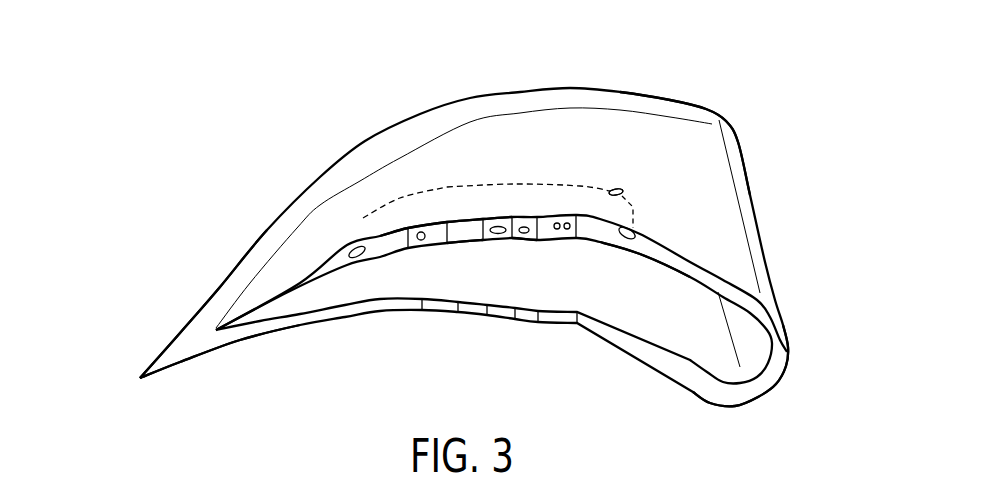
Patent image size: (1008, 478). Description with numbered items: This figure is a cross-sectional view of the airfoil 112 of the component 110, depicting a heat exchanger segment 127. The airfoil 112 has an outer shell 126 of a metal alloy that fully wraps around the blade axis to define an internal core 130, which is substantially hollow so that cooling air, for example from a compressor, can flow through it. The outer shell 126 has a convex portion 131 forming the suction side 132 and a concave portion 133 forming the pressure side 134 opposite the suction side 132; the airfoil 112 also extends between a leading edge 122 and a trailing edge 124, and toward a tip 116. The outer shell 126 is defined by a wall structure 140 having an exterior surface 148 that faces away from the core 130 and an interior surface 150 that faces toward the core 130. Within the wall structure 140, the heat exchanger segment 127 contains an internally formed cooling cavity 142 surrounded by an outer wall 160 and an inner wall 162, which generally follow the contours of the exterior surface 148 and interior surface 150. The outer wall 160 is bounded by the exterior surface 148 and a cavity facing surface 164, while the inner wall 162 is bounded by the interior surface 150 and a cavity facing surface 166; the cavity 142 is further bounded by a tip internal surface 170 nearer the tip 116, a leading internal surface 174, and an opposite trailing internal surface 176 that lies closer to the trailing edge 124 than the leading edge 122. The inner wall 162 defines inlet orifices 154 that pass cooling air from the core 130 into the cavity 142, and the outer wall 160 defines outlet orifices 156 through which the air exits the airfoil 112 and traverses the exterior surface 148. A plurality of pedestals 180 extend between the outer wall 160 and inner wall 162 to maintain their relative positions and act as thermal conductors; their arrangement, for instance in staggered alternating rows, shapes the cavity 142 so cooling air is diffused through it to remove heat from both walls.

The component 110 is at (184, 191).
The airfoil 112 is at (646, 169).
The tip 116 is at (563, 87).
The leading edge 122 is at (787, 362).
The trailing edge 124 is at (138, 381).
The outer shell 126 is at (495, 128).
The heat exchanger segment 127 is at (373, 268).
The core 130 is at (725, 357).
The convex portion 131 is at (527, 242).
The suction side 132 is at (442, 165).
The concave portion 133 is at (437, 312).
The pressure side 134 is at (502, 335).
The wall structure 140 is at (690, 268).
The cooling cavity 142 is at (525, 226).
The exterior surface 148 is at (744, 260).
The interior surface 150 is at (613, 248).
The inlet orifices 154 is at (357, 256).
The outlet orifices 156 is at (618, 190).
The outer wall 160 is at (497, 226).
The inner wall 162 is at (497, 241).
The cavity facing surface 164 is at (419, 231).
The cavity facing surface 166 is at (413, 249).
The tip internal surface 170 is at (590, 185).
The leading internal surface 174 is at (633, 207).
The trailing internal surface 176 is at (363, 216).
The pedestals 180 is at (541, 241).